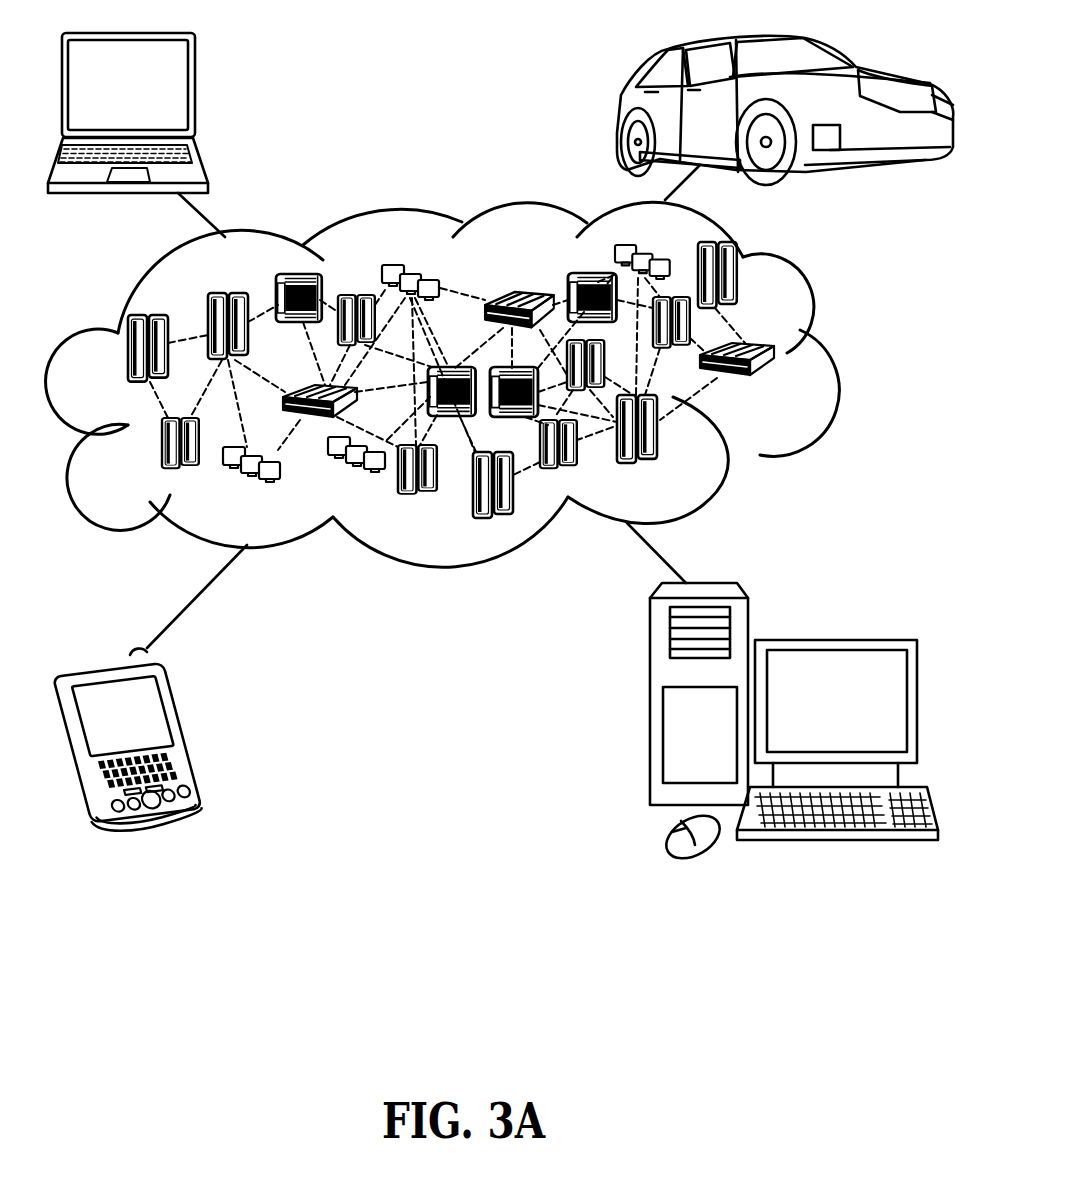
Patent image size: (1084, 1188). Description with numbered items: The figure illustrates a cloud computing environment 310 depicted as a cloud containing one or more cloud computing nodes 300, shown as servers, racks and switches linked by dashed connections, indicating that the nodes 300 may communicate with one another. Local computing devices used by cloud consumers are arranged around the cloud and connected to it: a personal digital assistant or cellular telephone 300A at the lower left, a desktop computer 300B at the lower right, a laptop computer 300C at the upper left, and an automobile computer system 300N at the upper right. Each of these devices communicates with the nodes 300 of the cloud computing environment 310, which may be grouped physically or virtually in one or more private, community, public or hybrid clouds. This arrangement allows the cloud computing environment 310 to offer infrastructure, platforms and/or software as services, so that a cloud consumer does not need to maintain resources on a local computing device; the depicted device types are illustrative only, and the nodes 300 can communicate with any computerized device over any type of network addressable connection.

The cloud computing nodes 300 is at (776, 388).
The cloud computing environment 310 is at (837, 358).
The personal digital assistant (PDA) or cellular telephone 300A is at (188, 730).
The desktop computer 300B is at (835, 640).
The laptop computer 300C is at (196, 93).
The automobile computer system 300N is at (620, 108).